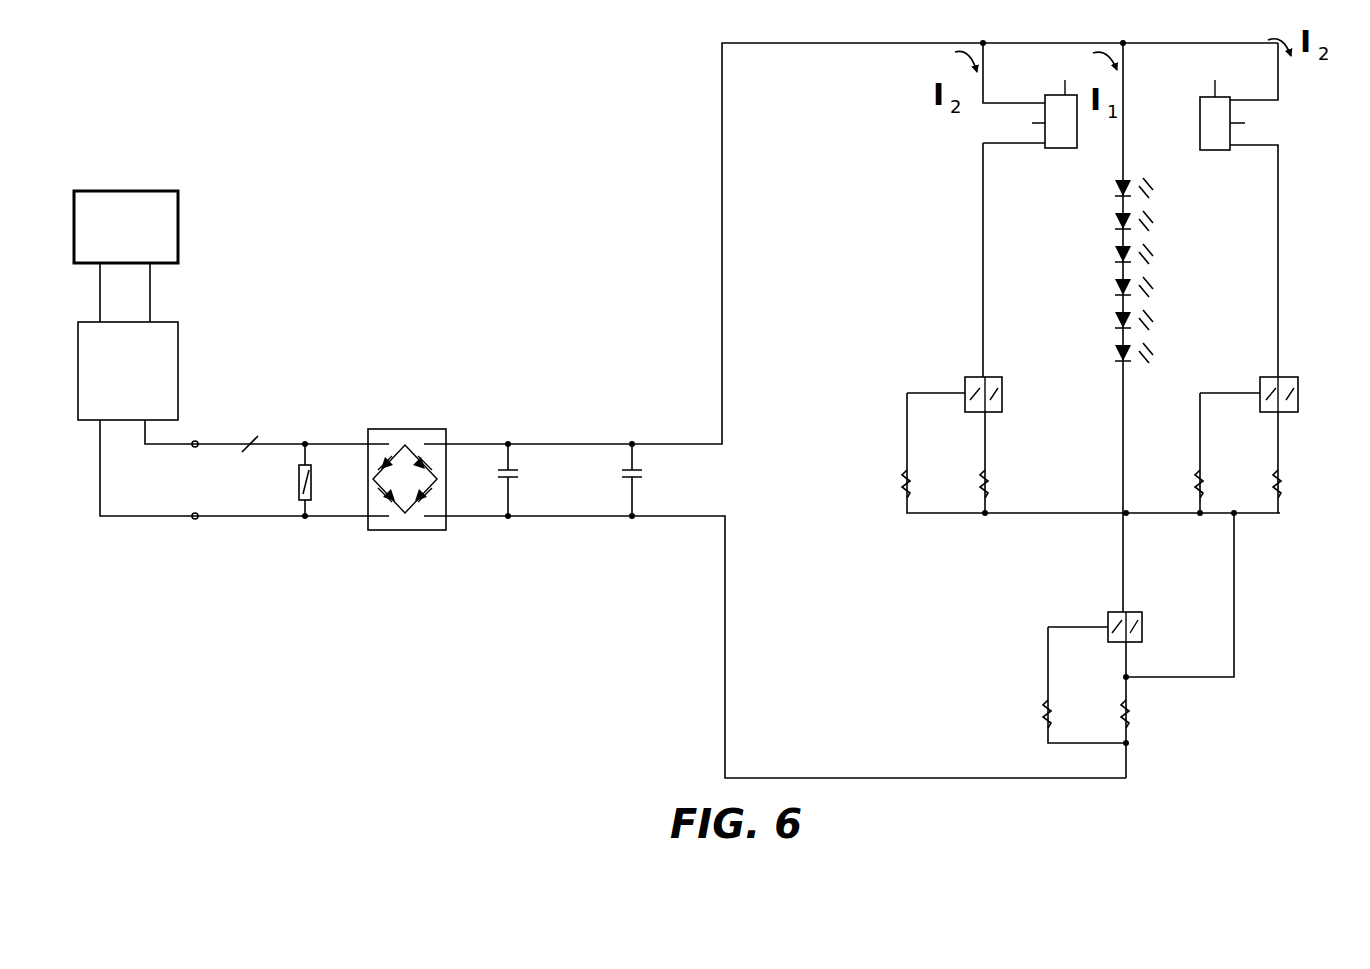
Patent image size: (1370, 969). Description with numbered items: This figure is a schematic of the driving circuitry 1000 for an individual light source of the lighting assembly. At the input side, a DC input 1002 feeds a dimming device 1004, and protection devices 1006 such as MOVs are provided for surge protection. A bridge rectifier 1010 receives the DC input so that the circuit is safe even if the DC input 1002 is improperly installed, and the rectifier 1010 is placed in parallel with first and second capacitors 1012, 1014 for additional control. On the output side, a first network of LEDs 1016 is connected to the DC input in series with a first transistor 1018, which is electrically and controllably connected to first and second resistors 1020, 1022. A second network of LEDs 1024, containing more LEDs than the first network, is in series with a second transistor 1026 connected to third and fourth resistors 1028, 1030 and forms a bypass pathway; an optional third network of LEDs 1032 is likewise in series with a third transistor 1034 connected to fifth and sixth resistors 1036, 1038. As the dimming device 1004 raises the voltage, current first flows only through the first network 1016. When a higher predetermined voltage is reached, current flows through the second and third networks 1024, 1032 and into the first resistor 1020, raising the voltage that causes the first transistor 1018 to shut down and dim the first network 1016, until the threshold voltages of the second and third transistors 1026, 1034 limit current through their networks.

The driving circuitry 1000 is at (622, 120).
The DC input 1002 is at (182, 220).
The dimming device 1004 is at (182, 365).
The protection devices 1006 is at (297, 492).
The bridge rectifier 1010 is at (410, 426).
The first capacitor 1012 is at (518, 470).
The second capacitor 1014 is at (645, 471).
The first network of LEDs 1016 is at (1096, 238).
The first transistor 1018 is at (1137, 598).
The first resistor 1020 is at (1130, 722).
The second resistor 1022 is at (1046, 712).
The second network of LEDs 1024 is at (1049, 101).
The second transistor 1026 is at (975, 370).
The third resistor 1028 is at (983, 477).
The fourth resistor 1030 is at (902, 478).
The third network of LEDs 1032 is at (1212, 102).
The third transistor 1034 is at (1268, 368).
The fifth resistor 1036 is at (1286, 482).
The sixth resistor 1038 is at (1202, 470).